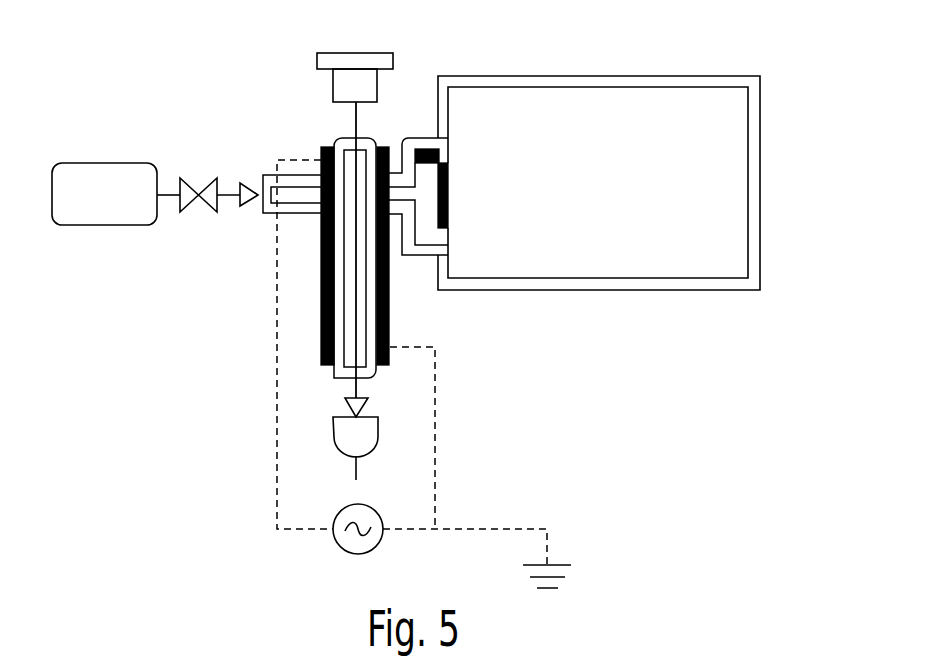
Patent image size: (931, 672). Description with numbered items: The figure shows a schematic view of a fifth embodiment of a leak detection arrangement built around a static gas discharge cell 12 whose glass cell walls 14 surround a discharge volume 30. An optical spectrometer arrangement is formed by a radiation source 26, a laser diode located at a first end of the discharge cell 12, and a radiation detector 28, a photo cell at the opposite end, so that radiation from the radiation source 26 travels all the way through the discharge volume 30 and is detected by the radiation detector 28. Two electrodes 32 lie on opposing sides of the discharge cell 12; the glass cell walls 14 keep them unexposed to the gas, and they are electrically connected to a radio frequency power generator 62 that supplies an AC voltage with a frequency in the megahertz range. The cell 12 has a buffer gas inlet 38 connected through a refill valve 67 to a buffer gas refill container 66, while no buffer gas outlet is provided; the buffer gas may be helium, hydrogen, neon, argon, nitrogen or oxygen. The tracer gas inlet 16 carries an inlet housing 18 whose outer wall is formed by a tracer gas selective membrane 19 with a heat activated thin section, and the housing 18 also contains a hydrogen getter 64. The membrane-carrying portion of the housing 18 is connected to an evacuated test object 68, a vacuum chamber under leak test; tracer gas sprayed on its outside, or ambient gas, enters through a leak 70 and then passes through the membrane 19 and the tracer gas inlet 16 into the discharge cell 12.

The gas discharge cell 12 is at (313, 385).
The cell walls 14 is at (340, 279).
The tracer gas inlet 16 is at (420, 210).
The inlet housing 18 is at (417, 248).
The tracer gas selective membrane 19 is at (449, 175).
The radiation source 26 is at (350, 73).
The radiation detector 28 is at (345, 435).
The discharge volume 30 is at (348, 240).
The electrodes 32 is at (324, 298).
The buffer gas inlet 38 is at (270, 173).
The radio frequency power generator 62 is at (340, 547).
The hydrogen getter 64 is at (423, 150).
The buffer gas refill container 66 is at (81, 163).
The refill valve 67 is at (200, 190).
The test object 68 is at (632, 145).
The leak 70 is at (755, 233).